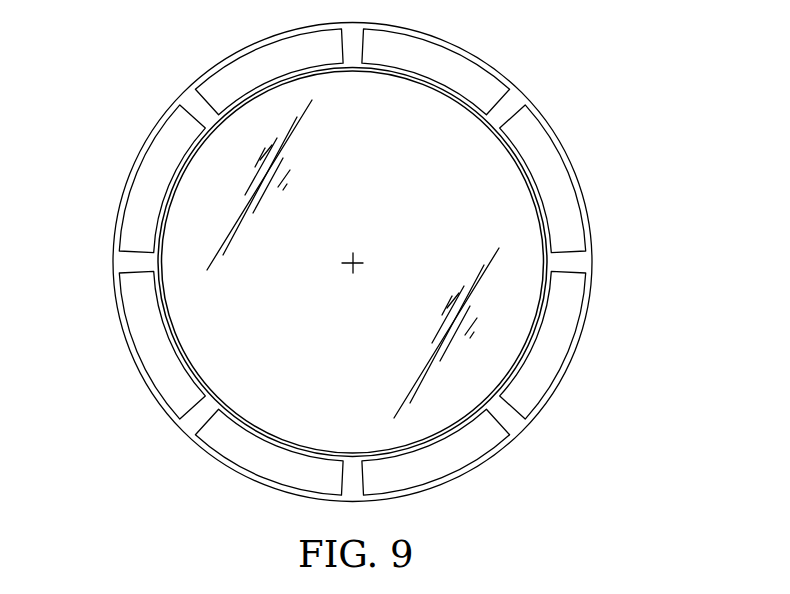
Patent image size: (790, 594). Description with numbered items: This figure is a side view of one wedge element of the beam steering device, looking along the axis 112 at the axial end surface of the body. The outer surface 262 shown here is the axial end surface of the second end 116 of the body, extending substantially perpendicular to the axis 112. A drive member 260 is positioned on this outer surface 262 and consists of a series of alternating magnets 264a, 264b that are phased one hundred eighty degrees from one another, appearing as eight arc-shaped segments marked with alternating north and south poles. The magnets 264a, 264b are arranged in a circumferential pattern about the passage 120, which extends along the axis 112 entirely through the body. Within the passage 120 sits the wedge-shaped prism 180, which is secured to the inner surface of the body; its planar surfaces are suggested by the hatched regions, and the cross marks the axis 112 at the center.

The second end 116 is at (112, 164).
The drive member 260 is at (397, 251).
The outer surface 262 is at (187, 95).
The magnet 264a is at (477, 72).
The magnet 264b is at (577, 229).
The passage 120 is at (257, 404).
The wedge-shaped prism 180 is at (375, 167).
The axis 112 is at (352, 268).